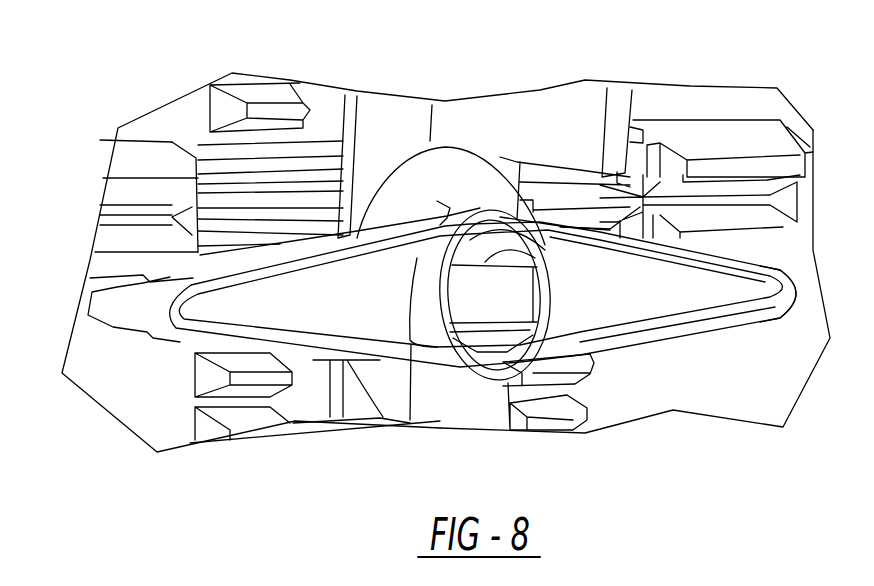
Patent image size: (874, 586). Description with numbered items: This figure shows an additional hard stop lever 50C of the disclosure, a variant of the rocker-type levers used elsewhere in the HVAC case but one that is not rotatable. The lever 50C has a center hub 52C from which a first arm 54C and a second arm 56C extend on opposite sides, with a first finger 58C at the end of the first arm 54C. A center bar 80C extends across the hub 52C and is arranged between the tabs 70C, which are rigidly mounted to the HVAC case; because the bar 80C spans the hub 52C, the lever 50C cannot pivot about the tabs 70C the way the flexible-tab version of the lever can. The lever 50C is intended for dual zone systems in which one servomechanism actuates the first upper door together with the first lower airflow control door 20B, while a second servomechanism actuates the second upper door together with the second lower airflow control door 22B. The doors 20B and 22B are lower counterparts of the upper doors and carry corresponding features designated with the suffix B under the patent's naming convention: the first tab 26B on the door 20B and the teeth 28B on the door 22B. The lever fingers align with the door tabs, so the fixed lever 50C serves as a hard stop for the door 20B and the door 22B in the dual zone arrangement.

The first lower airflow control door 20B is at (137, 380).
The second lower airflow control door 22B is at (697, 370).
The first tab 26B is at (150, 258).
The teeth 28B is at (770, 237).
The hard stop lever 50C is at (316, 372).
The hub 52C is at (427, 292).
The first arm 54C is at (243, 313).
The second arm 56C is at (722, 290).
The first finger 58C is at (115, 305).
The tabs 70C is at (513, 257).
The center bar 80C is at (473, 295).